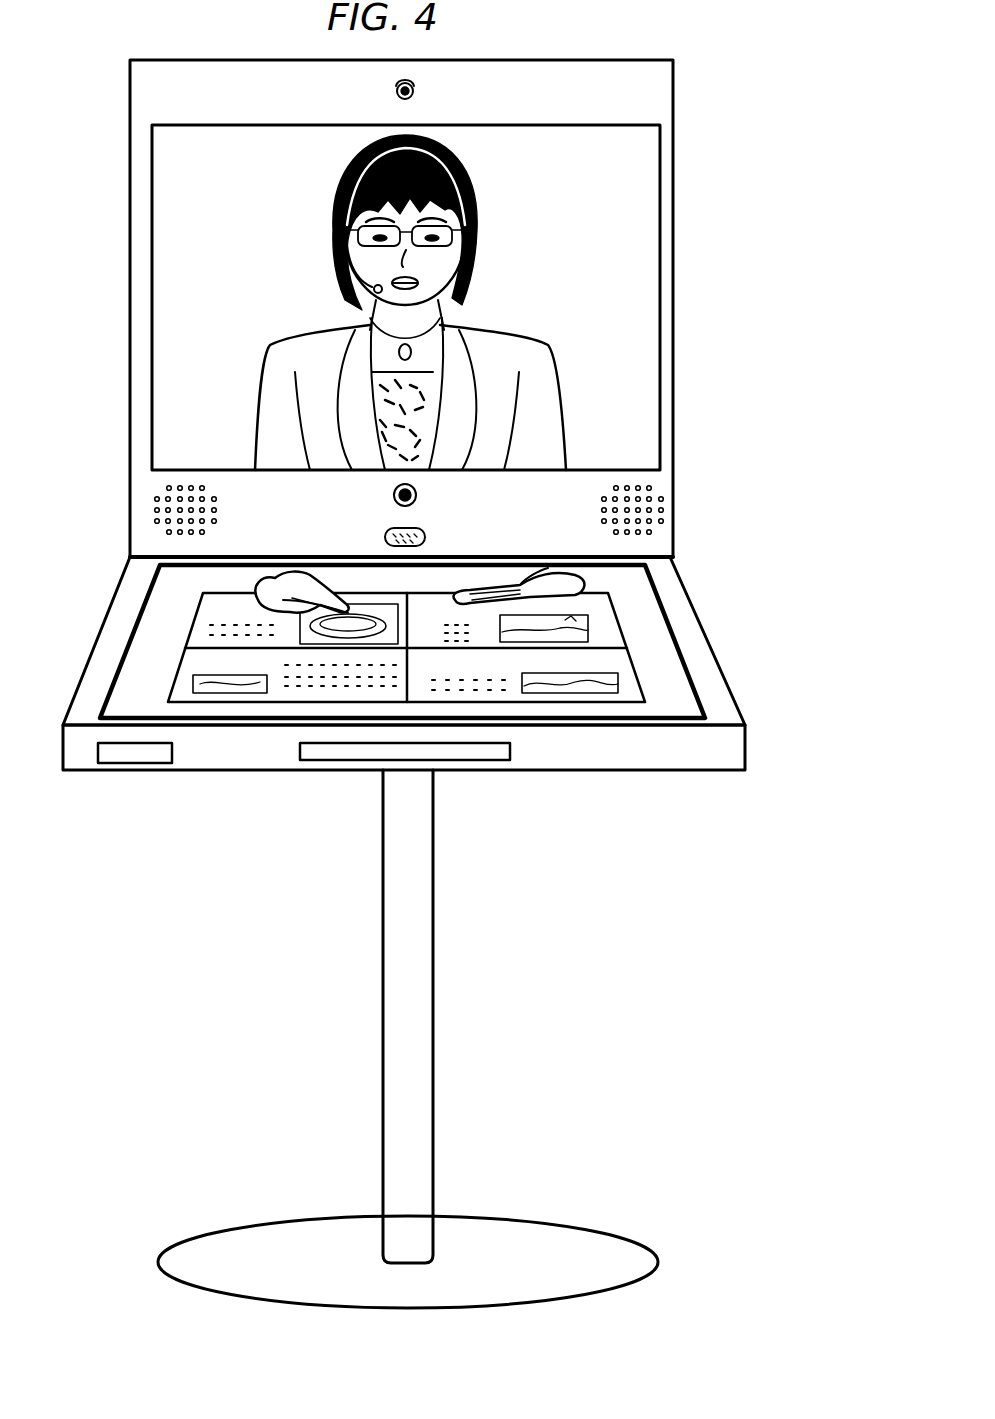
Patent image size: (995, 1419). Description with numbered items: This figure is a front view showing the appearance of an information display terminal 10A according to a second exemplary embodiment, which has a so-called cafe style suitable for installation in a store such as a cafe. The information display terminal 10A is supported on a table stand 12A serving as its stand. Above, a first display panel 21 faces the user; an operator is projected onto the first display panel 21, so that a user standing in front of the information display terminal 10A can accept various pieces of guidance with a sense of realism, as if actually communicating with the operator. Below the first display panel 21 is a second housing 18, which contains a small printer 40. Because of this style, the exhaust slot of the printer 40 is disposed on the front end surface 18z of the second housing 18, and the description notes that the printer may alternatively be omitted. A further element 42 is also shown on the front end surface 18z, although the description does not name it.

The information display terminal 10A is at (130, 213).
The first display panel 21 is at (172, 318).
The second housing 18 is at (685, 622).
The front end surface 18z is at (598, 760).
The card reader 42 is at (113, 758).
The printer 40 is at (313, 750).
The table stand 12A is at (398, 975).